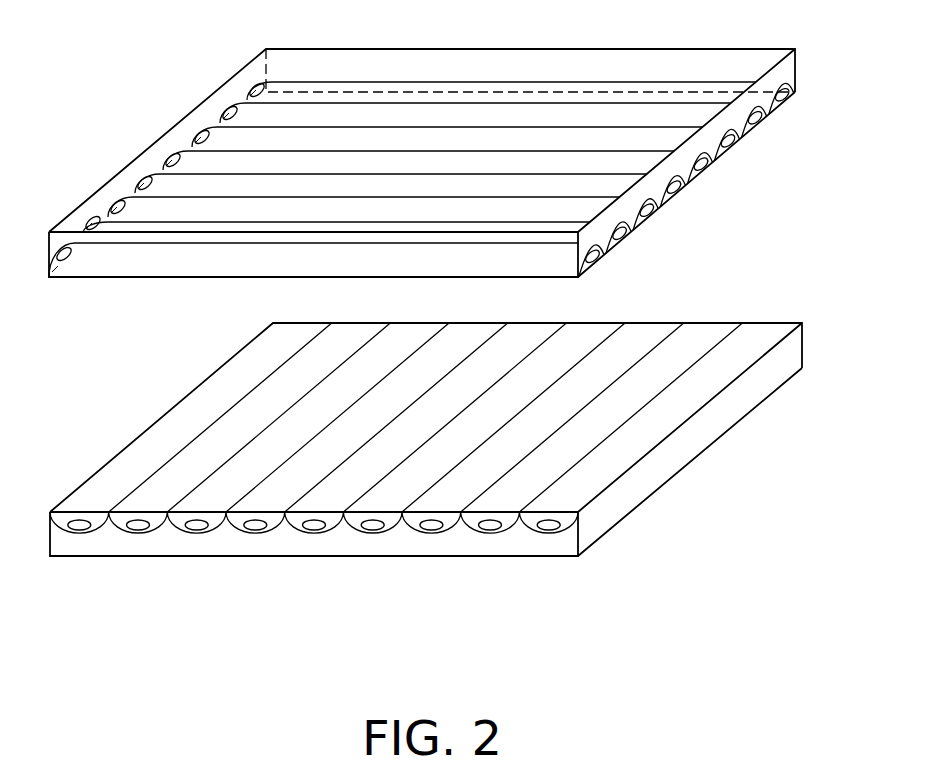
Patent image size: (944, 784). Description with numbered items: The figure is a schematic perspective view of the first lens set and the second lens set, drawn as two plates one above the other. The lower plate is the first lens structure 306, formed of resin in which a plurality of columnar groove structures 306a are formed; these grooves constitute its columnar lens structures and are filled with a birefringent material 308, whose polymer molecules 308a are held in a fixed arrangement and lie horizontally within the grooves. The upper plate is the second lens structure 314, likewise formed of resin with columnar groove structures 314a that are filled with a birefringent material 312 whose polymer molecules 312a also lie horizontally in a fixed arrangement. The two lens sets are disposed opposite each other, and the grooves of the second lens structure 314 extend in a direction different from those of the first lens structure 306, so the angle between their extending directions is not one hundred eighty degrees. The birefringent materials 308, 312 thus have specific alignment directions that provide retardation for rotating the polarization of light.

The first lens structure 306 is at (677, 458).
The columnar groove structures 306a is at (746, 352).
The birefringent material 308 is at (463, 518).
The polymer molecules 308a is at (549, 531).
The birefringent material 312 is at (72, 263).
The polymer molecules 312a is at (767, 117).
The second lens structure 314 is at (158, 150).
The columnar groove structures 314a is at (272, 122).